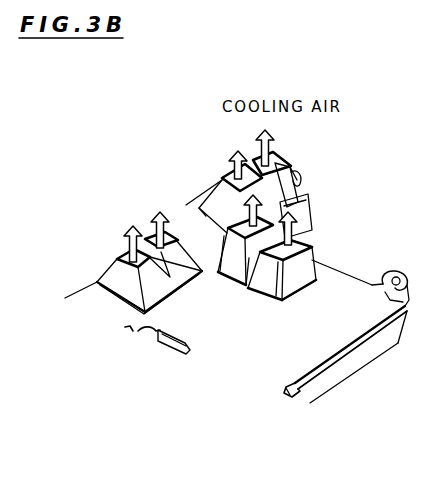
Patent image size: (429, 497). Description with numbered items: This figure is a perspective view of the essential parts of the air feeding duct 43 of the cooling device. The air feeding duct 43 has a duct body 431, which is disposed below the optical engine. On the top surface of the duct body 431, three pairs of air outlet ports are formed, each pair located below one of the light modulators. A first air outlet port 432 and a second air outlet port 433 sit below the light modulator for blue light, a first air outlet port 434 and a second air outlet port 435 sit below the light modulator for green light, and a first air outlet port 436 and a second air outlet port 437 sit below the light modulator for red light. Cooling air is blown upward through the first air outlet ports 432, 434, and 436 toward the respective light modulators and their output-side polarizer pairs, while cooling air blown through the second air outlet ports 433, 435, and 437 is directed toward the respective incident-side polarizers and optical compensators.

The air feeding duct 43 is at (335, 370).
The duct body 431 is at (330, 290).
The first air outlet port 432 is at (215, 168).
The second air outlet port 433 is at (253, 146).
The first air outlet port 434 is at (285, 192).
The second air outlet port 435 is at (312, 222).
The first air outlet port 436 is at (147, 230).
The second air outlet port 437 is at (117, 256).